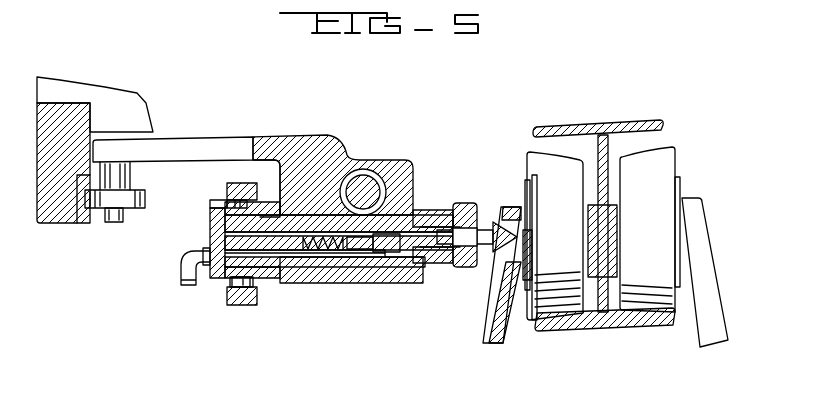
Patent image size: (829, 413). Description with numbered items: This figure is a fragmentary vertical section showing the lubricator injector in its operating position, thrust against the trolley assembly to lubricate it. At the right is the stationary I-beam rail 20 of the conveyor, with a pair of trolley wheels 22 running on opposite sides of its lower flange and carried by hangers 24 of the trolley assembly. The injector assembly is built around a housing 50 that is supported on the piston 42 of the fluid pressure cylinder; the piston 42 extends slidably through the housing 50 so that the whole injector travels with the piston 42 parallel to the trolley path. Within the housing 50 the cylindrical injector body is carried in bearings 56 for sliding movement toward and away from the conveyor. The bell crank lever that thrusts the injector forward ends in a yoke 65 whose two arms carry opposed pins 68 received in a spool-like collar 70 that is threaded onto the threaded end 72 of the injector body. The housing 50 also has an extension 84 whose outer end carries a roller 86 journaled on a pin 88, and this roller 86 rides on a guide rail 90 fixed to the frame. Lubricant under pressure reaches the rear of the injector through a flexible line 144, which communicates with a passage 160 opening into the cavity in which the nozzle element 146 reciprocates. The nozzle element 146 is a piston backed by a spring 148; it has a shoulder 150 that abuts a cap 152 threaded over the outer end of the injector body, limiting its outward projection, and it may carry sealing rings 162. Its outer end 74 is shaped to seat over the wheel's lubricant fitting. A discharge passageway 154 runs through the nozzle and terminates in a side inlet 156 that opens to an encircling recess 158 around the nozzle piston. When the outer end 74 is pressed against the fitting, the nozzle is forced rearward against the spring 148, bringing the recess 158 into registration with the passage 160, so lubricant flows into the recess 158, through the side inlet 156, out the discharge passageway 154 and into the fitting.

The I-beam rail 20 is at (648, 123).
The trolley wheels 22 is at (537, 160).
The hangers 24 is at (510, 342).
The piston 42 is at (365, 183).
The housing 50 is at (352, 162).
The bearings 56 is at (283, 278).
The yoke 65 is at (250, 305).
The pins 68 is at (232, 196).
The spool-like collar 70 is at (215, 210).
The threaded end 72 is at (213, 229).
The nozzle outer end 74 is at (505, 218).
The extension 84 is at (215, 145).
The roller 86 is at (138, 210).
The pin 88 is at (110, 222).
The guide rail 90 is at (87, 225).
The lubricant line 144 is at (186, 268).
The nozzle element 146 is at (430, 232).
The spring 148 is at (327, 250).
The shoulder 150 is at (456, 258).
The cap 152 is at (462, 205).
The discharge passageway 154 is at (498, 258).
The side inlet 156 is at (388, 252).
The encircling recess 158 is at (398, 255).
The passage 160 is at (322, 255).
The sealing rings 162 is at (417, 212).